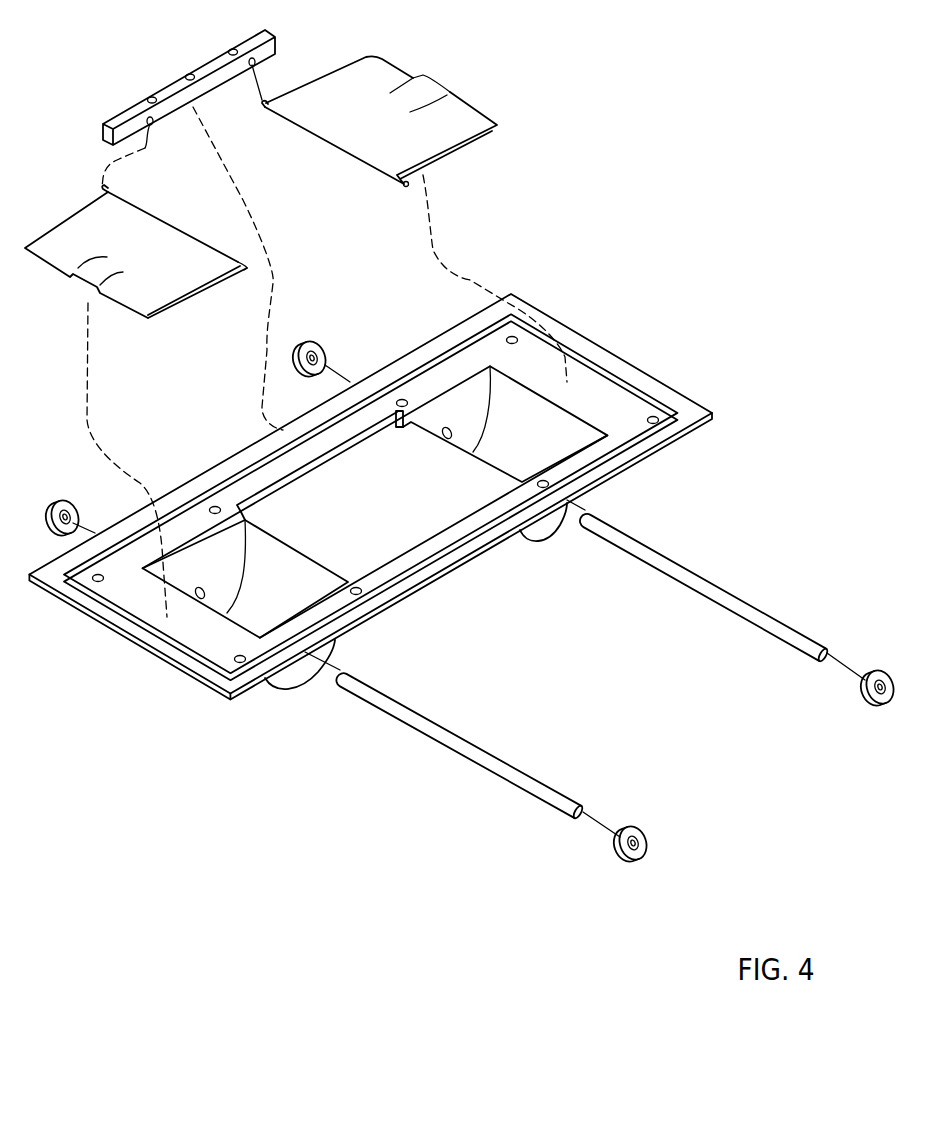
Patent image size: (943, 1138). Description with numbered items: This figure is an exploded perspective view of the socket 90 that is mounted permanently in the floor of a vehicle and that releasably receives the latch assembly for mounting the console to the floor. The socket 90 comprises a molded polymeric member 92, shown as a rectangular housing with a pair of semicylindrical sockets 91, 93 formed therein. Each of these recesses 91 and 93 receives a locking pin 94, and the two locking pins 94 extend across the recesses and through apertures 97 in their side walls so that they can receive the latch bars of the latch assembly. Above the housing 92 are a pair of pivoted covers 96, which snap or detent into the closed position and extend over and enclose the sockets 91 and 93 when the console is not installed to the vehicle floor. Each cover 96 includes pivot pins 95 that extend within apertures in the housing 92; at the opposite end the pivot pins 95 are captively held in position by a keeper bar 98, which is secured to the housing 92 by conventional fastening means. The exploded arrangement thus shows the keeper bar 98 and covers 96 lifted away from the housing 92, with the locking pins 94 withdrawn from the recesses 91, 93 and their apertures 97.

The socket 90 is at (585, 218).
The semicylindrical socket 91 is at (305, 597).
The molded polymeric member 92 is at (700, 387).
The semicylindrical socket 93 is at (577, 437).
The locking pin 94 is at (713, 587).
The pivot pin 95 is at (407, 188).
The pivoted cover 96 is at (383, 72).
The aperture 97 is at (453, 435).
The keeper bar 98 is at (272, 32).